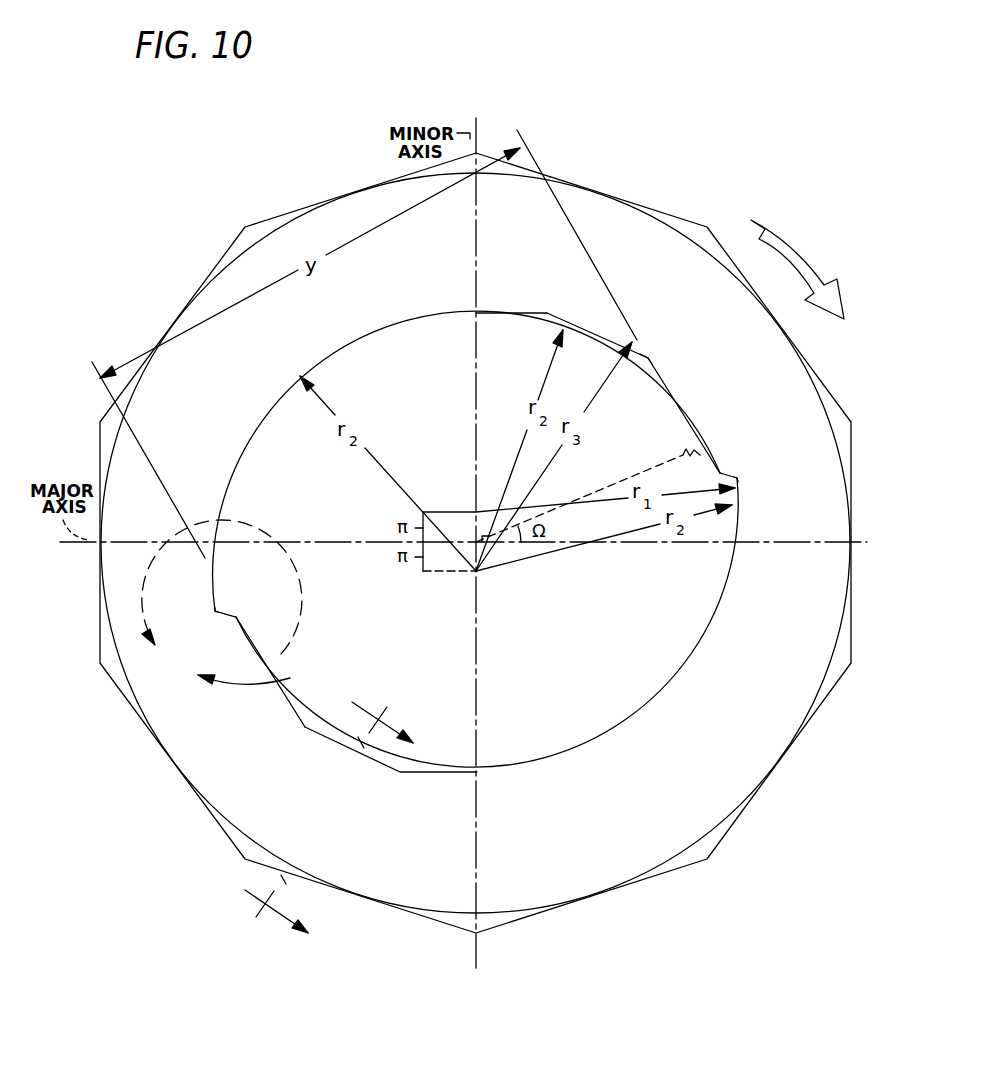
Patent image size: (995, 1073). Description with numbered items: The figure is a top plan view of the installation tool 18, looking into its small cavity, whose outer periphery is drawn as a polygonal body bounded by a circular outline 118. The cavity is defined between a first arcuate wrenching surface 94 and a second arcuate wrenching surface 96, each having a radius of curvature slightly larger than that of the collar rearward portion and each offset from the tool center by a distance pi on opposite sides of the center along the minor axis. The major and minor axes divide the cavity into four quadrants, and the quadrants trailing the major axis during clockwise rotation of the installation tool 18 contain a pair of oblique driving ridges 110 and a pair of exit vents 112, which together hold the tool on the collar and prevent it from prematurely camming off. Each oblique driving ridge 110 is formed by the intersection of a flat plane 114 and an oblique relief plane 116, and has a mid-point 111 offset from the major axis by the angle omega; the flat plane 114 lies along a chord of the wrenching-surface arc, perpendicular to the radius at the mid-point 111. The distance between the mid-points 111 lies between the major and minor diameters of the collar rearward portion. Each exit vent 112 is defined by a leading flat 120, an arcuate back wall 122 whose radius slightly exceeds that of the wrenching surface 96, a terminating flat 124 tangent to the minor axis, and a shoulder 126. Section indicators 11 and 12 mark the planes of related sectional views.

The installation tool 18 is at (646, 188).
The outer cylindrical surface 118 is at (770, 765).
The second arcuate wrenching surface 96 is at (380, 330).
The first arcuate wrenching surface 94 is at (528, 768).
The terminating flat 124 is at (522, 311).
The arcuate back wall 122 is at (593, 323).
The shoulder 126 is at (548, 320).
The leading flat 120 is at (659, 375).
The flat plane 114 is at (679, 409).
The oblique relief plane 116 is at (720, 466).
The exit vent 112 is at (643, 363).
The mid-point 111 is at (702, 463).
The oblique driving ridge 110 is at (238, 626).
The section line 11- 11 is at (222, 602).
The section line 12- 12 is at (346, 828).